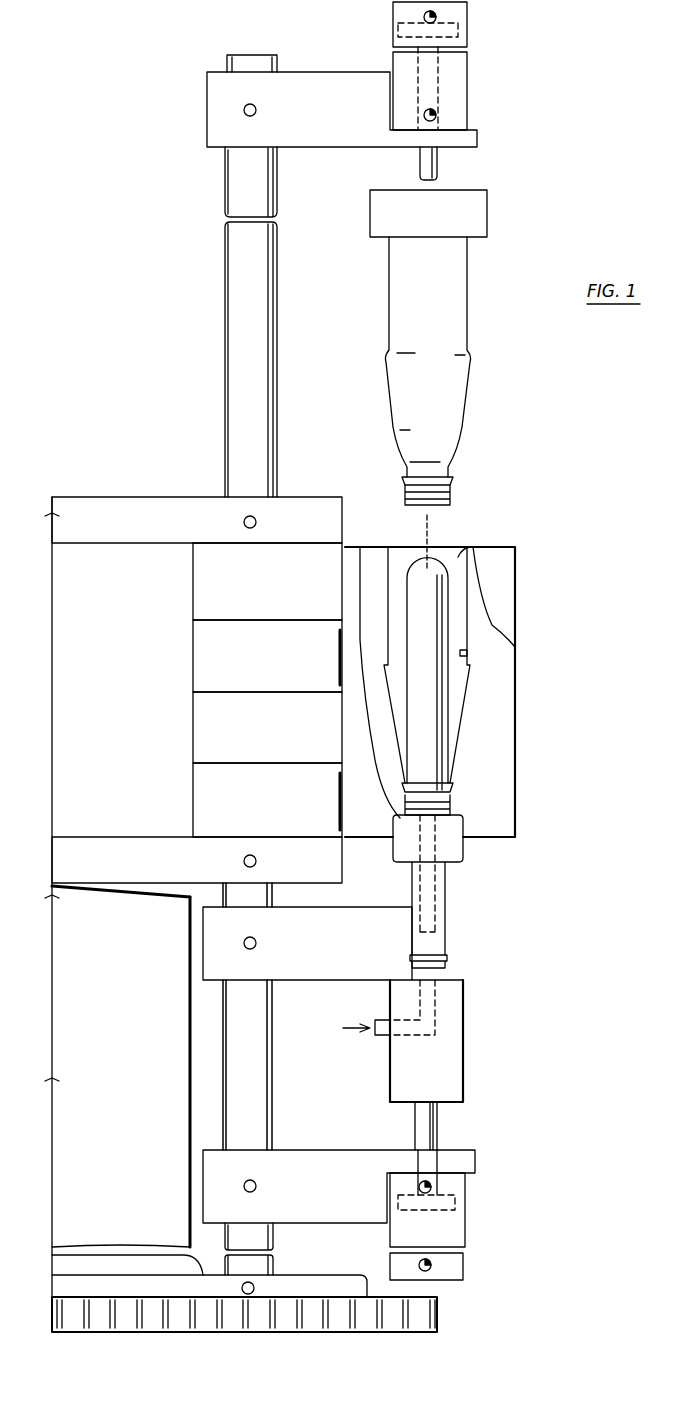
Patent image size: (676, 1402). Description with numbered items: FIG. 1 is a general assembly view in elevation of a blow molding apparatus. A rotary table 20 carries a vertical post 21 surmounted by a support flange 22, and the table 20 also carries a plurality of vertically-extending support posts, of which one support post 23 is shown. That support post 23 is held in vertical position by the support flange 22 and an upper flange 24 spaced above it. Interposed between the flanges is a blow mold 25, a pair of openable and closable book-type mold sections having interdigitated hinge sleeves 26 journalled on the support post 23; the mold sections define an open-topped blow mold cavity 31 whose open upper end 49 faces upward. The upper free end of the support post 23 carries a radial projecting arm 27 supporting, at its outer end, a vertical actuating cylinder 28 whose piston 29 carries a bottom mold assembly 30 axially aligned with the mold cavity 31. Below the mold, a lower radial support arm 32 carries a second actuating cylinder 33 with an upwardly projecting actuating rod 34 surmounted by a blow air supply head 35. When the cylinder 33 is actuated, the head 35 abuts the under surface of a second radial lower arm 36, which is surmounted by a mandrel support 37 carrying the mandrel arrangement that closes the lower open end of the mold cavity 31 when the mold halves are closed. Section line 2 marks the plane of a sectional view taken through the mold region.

The rotary table 20 is at (450, 1316).
The vertical post 21 is at (135, 1058).
The support flange 22 is at (107, 848).
The support post 23 is at (257, 1047).
The upper flange 24 is at (108, 506).
The blow mold 25 is at (528, 707).
The interdigitated hinge sleeves 26 is at (197, 640).
The radial projecting arm 27 is at (334, 118).
The vertical actuating cylinder 28 is at (460, 85).
The piston 29 is at (437, 163).
The bottom mold assembly 30 is at (500, 216).
The blow mold cavity 31 is at (463, 653).
The lower radial support arm 32 is at (344, 1193).
The second actuating cylinder 33 is at (450, 1225).
The actuating rod 34 is at (432, 1125).
The blow air supply head 35 is at (453, 1063).
The second radial lower arm 36 is at (337, 960).
The mandrel support 37 is at (440, 913).
The open upper end of the mold cavity 49 is at (462, 553).
The section line 2- 2 is at (427, 523).